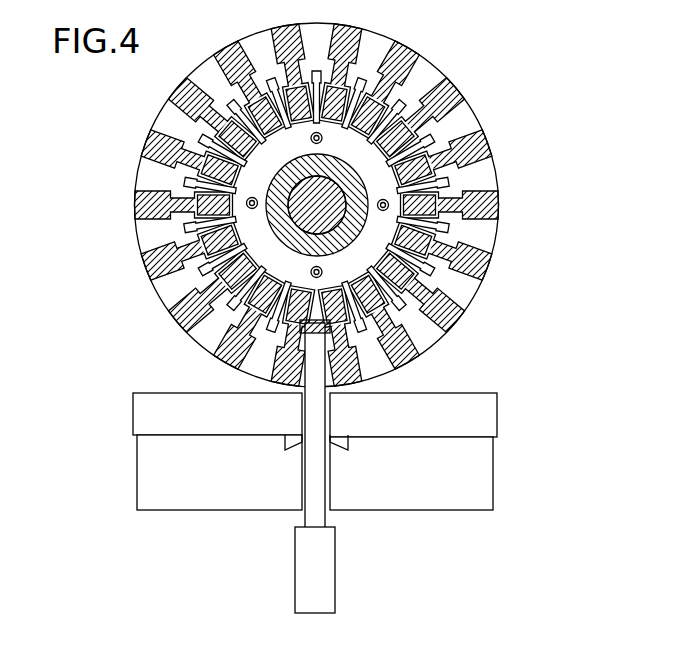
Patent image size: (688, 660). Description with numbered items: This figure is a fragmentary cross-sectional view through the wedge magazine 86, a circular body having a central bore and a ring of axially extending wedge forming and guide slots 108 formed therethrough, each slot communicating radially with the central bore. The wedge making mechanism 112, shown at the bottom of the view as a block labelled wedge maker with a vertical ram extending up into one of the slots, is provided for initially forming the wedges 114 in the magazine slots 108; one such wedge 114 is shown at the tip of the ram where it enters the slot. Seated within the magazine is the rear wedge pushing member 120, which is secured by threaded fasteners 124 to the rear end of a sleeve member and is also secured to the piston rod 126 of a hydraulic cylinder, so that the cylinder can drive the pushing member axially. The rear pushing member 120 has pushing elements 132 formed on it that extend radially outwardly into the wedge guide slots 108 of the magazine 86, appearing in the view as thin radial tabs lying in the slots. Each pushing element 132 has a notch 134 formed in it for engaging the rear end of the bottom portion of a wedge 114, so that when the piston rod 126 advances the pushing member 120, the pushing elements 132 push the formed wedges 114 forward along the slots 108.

The wedge magazine 86 is at (369, 205).
The wedge forming and guide slots 108 is at (420, 82).
The wedge making mechanism 112 is at (493, 481).
The wedge 114 is at (298, 332).
The rear wedge pushing member 120 is at (363, 158).
The threaded fasteners 124 is at (254, 196).
The piston rod 126 is at (324, 203).
The pushing elements 132 is at (407, 142).
The notches 134 is at (447, 227).